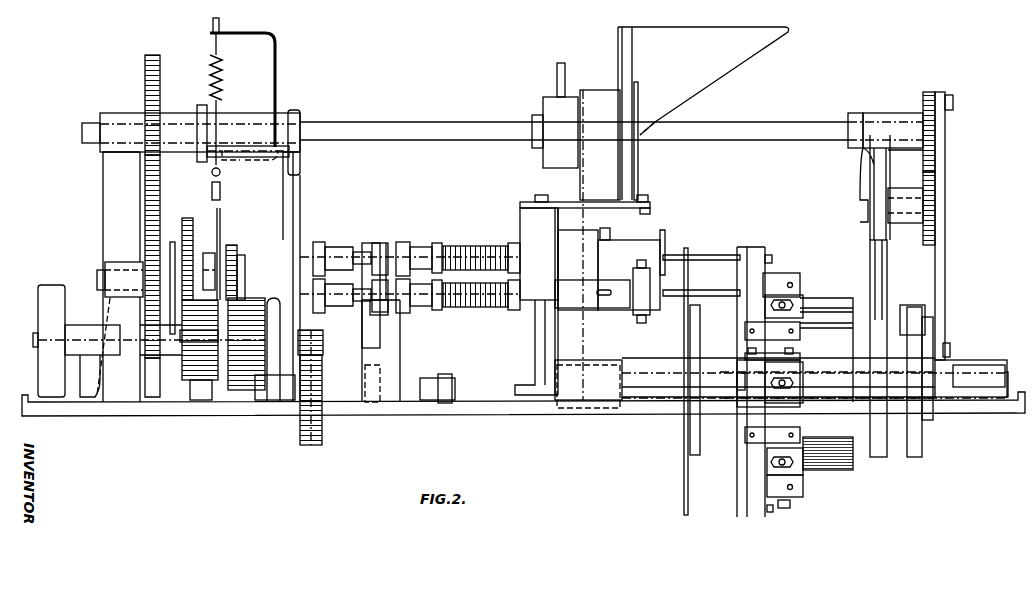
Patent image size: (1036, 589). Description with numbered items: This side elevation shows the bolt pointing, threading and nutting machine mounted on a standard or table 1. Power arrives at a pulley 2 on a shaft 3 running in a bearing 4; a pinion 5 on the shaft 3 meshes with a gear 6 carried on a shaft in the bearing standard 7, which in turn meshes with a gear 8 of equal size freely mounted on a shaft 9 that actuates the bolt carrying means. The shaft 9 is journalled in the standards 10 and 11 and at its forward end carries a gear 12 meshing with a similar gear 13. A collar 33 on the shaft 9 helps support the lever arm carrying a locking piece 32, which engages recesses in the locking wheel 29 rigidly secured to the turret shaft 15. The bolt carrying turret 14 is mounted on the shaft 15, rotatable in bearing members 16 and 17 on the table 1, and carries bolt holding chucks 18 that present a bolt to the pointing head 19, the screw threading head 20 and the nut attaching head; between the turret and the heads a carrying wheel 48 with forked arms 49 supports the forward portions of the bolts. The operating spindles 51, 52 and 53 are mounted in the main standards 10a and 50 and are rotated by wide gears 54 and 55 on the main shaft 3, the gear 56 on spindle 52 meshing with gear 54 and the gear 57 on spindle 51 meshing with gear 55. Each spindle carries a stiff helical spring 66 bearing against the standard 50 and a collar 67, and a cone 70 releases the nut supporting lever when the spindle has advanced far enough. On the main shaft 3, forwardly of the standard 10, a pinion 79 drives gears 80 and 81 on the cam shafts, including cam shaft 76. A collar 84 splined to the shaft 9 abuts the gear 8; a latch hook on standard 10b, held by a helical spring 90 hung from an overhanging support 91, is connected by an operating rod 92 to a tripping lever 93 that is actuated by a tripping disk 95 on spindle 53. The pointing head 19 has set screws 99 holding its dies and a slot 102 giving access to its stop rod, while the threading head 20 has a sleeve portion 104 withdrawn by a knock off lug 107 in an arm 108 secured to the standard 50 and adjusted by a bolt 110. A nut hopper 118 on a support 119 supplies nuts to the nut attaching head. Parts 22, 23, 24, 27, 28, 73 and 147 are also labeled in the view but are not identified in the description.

The standard or table 1 is at (446, 415).
The pulley 2 is at (40, 300).
The shaft 3 is at (78, 325).
The bearing 4 is at (106, 400).
The pinion 5 is at (148, 400).
The gear 6 is at (145, 248).
The bearing standard 7 is at (100, 265).
The gear 8 is at (145, 165).
The shaft 9 is at (330, 120).
The standard 10 is at (103, 207).
The main standard 10a is at (270, 398).
The standard 10b is at (300, 192).
The standard 11 is at (868, 182).
The gear 12 is at (933, 146).
The gear 13 is at (933, 195).
The bolt carrying turret 14 is at (855, 457).
The shaft 15 is at (944, 372).
The bearing member 16 is at (960, 397).
The bearing member 17 is at (586, 402).
The bolt holding chuck 18 is at (792, 500).
The pointing head 19 is at (572, 305).
The screw threading head 20 is at (640, 240).
The plate 22 is at (945, 280).
The nut 23 is at (953, 103).
The bar 24 is at (920, 452).
The block 27 is at (928, 330).
The bracket 28 is at (909, 305).
The locking wheel 29 is at (884, 445).
The locking piece 32 is at (856, 112).
The collar 33 is at (896, 112).
The carrying wheel 48 is at (692, 345).
The arms 49 is at (690, 320).
The main standard 50 is at (520, 212).
The operating spindle 51 is at (465, 310).
The operating spindle 52 is at (462, 247).
The operating spindle 53 is at (207, 288).
The wide gear 54 is at (195, 385).
The wide gear 55 is at (203, 400).
The gear 56 is at (218, 220).
The gear 57 is at (235, 246).
The helical spring 66 is at (442, 246).
The collar 67 is at (434, 243).
The cone 70 is at (348, 254).
The bracket 73 is at (372, 402).
The cam shaft 76 is at (432, 402).
The pinion 79 is at (323, 340).
The gear 80 is at (323, 433).
The gear 81 is at (298, 432).
The collar 84 is at (233, 114).
The helical spring 90 is at (223, 72).
The overhanging support 91 is at (248, 33).
The operating rod 92 is at (221, 173).
The tripping lever 93 is at (205, 390).
The tripping disk 95 is at (184, 225).
The set screws 99 is at (650, 318).
The slot 102 is at (612, 298).
The sleeve portion 104 is at (606, 238).
The knock off lug 107 is at (652, 205).
The arm 108 is at (565, 202).
The bolt 110 is at (539, 196).
The nut hopper 118 is at (697, 28).
The support 119 is at (640, 160).
The pin 147 is at (173, 6).